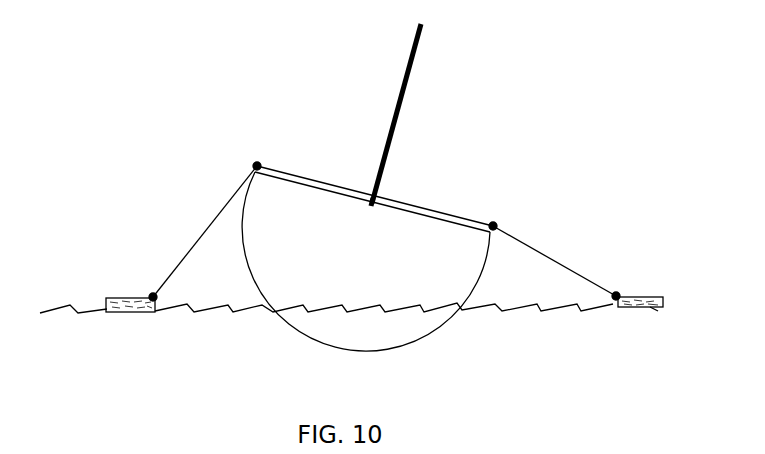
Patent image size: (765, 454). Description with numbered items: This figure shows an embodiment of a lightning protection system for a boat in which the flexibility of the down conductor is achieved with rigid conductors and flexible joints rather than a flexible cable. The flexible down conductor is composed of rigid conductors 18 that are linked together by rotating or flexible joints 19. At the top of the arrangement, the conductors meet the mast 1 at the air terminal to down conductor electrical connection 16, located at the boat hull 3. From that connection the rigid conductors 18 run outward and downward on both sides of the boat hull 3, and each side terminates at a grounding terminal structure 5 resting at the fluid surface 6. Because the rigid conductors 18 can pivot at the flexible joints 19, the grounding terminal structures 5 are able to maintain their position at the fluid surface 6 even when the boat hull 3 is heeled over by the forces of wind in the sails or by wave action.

The mast 1 is at (423, 103).
The boat hull 3 is at (415, 350).
The grounding terminal structure 5 is at (107, 290).
The fluid surface 6 is at (208, 320).
The air terminal to down conductor electrical connection 16 is at (370, 165).
The rigid conductor 18 is at (192, 220).
The rotating or flexible joint 19 is at (146, 282).